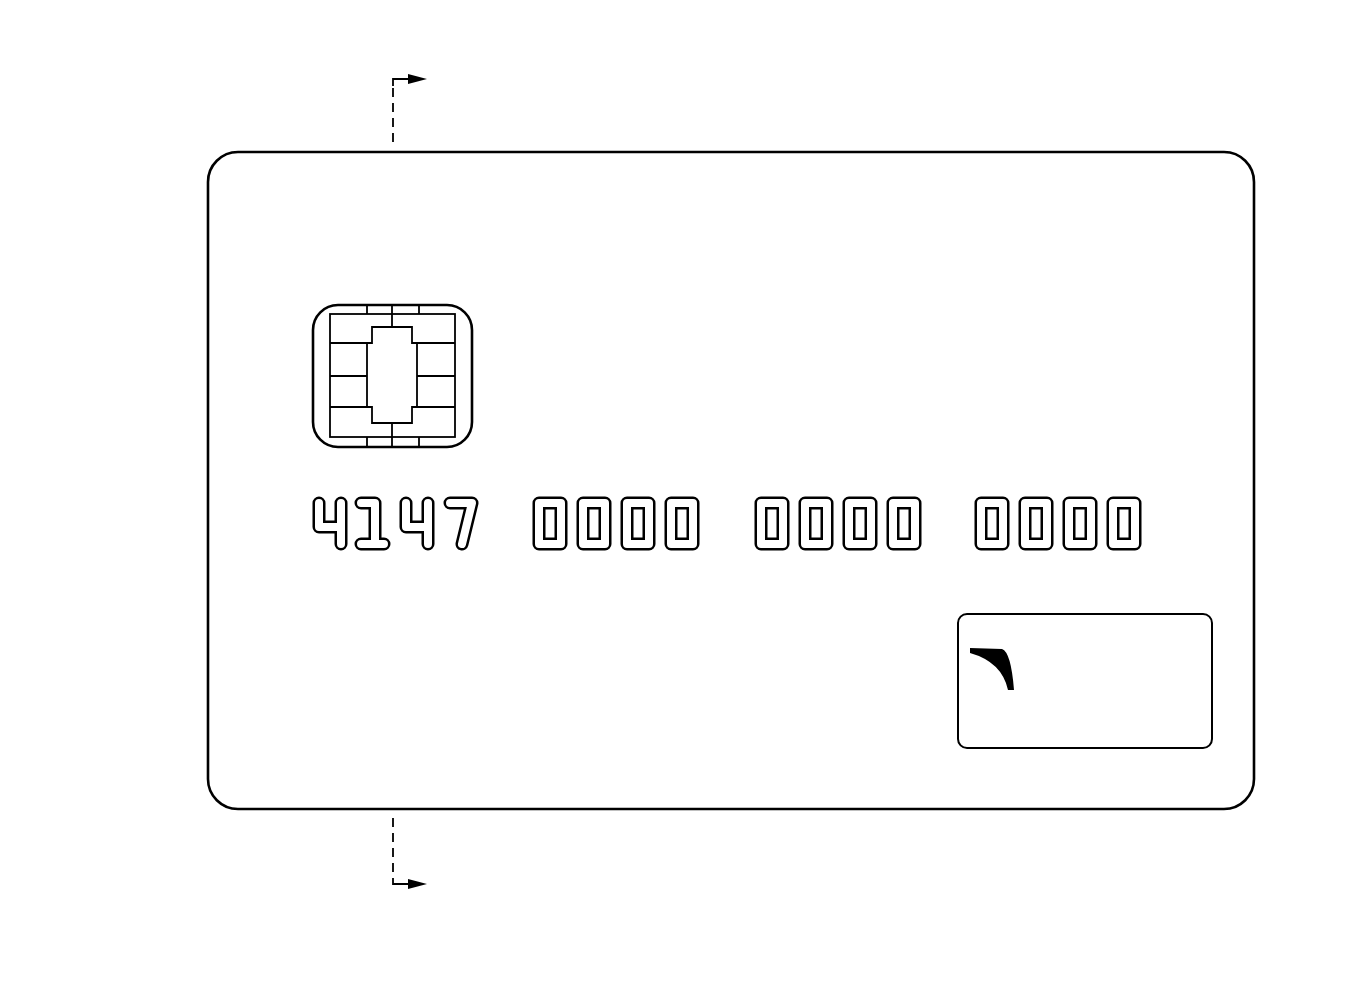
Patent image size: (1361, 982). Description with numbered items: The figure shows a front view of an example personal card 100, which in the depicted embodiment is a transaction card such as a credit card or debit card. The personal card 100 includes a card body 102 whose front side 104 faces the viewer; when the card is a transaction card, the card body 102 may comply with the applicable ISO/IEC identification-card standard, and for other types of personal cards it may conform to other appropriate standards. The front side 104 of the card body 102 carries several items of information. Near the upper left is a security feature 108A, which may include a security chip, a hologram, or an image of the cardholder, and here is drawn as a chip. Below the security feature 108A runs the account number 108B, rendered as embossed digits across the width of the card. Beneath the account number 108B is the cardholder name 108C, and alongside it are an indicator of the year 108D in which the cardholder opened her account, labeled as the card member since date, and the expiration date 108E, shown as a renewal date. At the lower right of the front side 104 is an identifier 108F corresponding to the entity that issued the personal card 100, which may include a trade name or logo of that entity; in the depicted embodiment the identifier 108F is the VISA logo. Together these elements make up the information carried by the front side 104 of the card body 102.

The personal card 100 is at (186, 106).
The card body 102 is at (1253, 170).
The front side 104 is at (1235, 336).
The security feature 108A is at (318, 392).
The account number 108B is at (313, 522).
The cardholder name 108C is at (318, 717).
The indicator of the year 108D is at (548, 658).
The expiration date 108E is at (814, 657).
The identifier 108F is at (1195, 692).